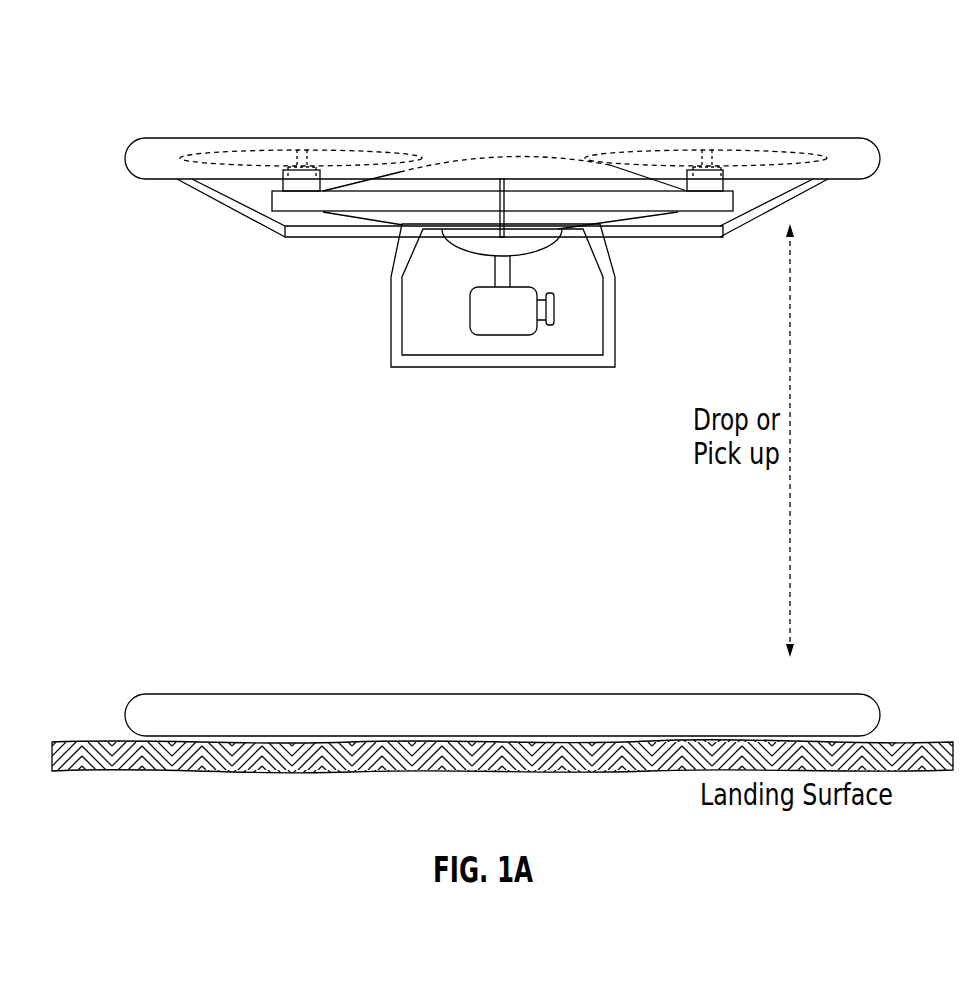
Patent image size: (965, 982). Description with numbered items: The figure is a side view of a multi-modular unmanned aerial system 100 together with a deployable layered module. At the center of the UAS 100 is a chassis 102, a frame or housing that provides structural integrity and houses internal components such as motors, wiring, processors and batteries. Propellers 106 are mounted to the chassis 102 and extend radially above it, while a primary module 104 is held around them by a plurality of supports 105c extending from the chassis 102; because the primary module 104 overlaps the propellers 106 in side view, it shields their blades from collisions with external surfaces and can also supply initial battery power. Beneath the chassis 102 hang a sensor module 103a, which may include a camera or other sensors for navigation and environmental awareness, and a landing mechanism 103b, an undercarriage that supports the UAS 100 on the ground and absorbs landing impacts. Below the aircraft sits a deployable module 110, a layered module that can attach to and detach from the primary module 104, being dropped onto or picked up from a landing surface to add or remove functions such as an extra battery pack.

The unmanned aerial system 100 is at (146, 72).
The chassis 102 is at (502, 164).
The primary module 104 is at (884, 158).
The propellers 106 is at (342, 143).
The supports 105c is at (233, 213).
The sensor module 103a is at (516, 315).
The landing mechanism 103b is at (507, 368).
The deployable module 110 is at (886, 713).